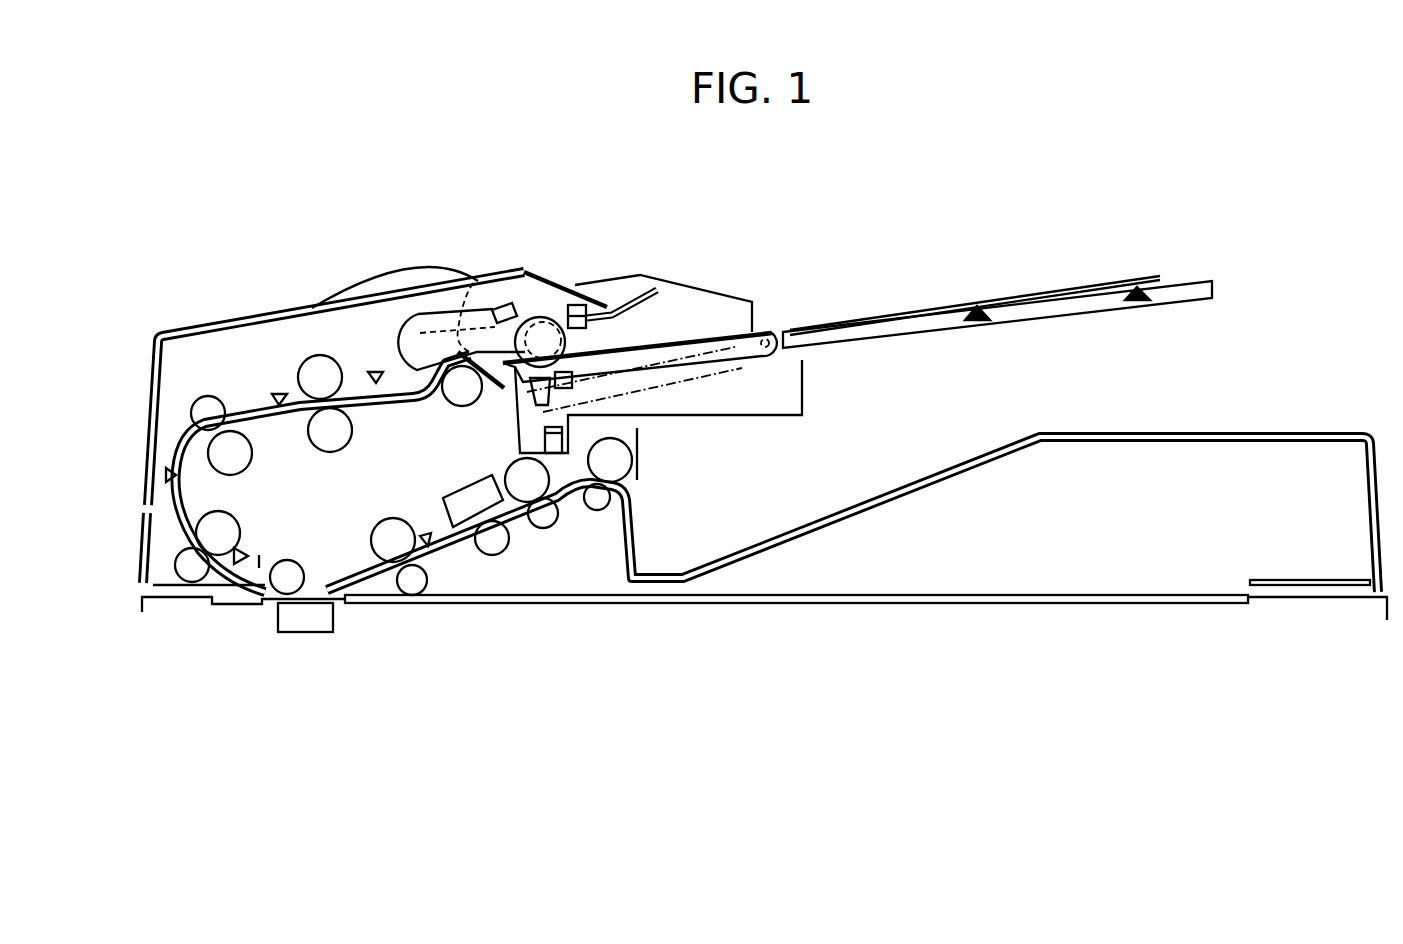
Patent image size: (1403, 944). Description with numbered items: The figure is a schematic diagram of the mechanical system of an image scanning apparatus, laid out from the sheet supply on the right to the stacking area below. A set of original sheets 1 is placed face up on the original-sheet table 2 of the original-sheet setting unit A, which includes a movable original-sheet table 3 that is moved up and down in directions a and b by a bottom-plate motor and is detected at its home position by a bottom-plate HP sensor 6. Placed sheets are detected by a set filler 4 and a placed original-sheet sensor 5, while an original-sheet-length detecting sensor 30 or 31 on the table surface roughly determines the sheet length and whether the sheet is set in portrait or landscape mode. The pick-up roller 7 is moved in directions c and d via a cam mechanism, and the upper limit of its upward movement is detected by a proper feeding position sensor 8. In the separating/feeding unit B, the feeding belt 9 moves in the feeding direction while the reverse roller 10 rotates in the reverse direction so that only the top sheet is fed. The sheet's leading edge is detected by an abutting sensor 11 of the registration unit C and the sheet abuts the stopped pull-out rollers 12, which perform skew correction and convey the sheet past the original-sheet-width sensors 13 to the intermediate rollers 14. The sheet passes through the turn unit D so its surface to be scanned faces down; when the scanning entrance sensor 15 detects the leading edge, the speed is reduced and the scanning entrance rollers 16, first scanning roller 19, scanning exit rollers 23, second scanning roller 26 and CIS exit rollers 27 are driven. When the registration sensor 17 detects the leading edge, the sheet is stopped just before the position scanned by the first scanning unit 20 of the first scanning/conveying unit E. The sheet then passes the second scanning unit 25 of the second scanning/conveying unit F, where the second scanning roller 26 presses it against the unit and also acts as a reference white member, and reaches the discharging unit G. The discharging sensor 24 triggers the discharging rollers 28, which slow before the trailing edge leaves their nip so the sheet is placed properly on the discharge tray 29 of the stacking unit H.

The original sheets 1 is at (1068, 289).
The original-sheet table 2 is at (878, 322).
The movable original-sheet table 3 is at (662, 345).
The set filler 4 is at (578, 303).
The placed original-sheet sensor 5 is at (514, 399).
The bottom-plate HP sensor 6 is at (543, 438).
The pick-up roller 7 is at (543, 322).
The proper feeding position sensor 8 is at (503, 306).
The feeding belt 9 is at (478, 270).
The reverse roller 10 is at (441, 400).
The abutting sensor 11 is at (376, 370).
The pull-out rollers 12 is at (332, 356).
The original-sheet-width sensors 13 is at (278, 392).
The intermediate rollers 14 is at (222, 404).
The scanning entrance sensor 15 is at (163, 470).
The scanning entrance rollers 16 is at (192, 583).
The registration sensor 17 is at (239, 552).
The first scanning roller 19 is at (289, 560).
The first scanning unit 20 is at (305, 633).
The scanning exit rollers 23 is at (397, 592).
The discharging sensor 24 is at (431, 549).
The second scanning unit 25 is at (466, 486).
The second scanning roller 26 is at (490, 557).
The CIS exit rollers 27 is at (539, 530).
The discharging rollers 28 is at (589, 477).
The discharge tray 29 is at (830, 520).
The original-sheet-length detecting sensor 30 is at (988, 319).
The original-sheet-length detecting sensor 31 is at (1148, 299).
The original-sheet setting unit A is at (821, 297).
The separating/feeding unit B is at (513, 236).
The registration unit C is at (303, 349).
The turn unit D is at (173, 424).
The first scanning/conveying unit E is at (278, 642).
The second scanning/conveying unit F is at (441, 492).
The discharging unit G is at (651, 456).
The stacking unit H is at (858, 492).
The direction a is at (731, 340).
The direction b is at (728, 354).
The direction c is at (582, 357).
The direction d is at (576, 347).